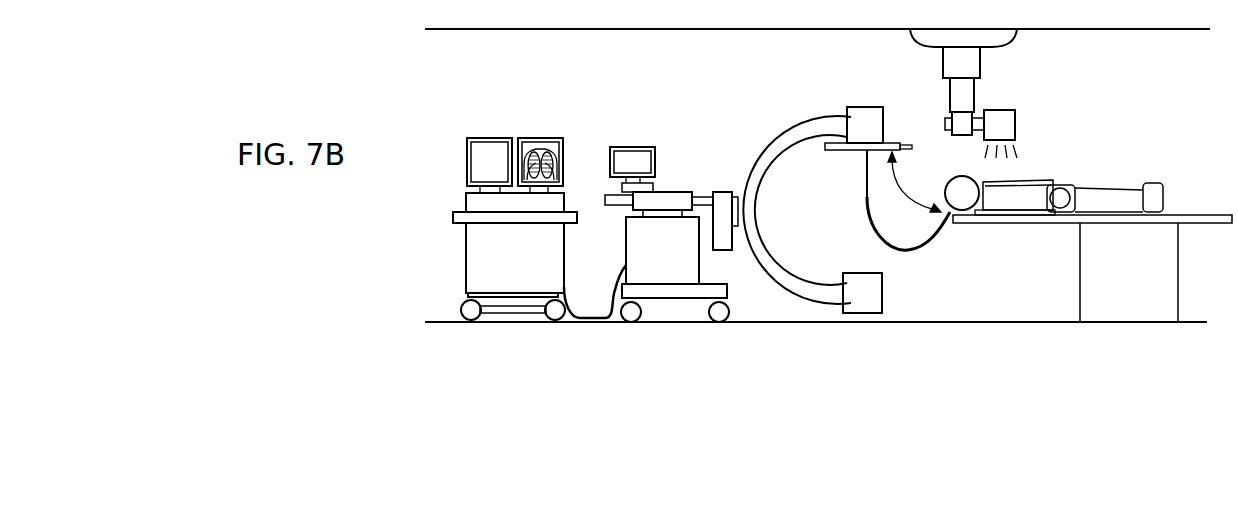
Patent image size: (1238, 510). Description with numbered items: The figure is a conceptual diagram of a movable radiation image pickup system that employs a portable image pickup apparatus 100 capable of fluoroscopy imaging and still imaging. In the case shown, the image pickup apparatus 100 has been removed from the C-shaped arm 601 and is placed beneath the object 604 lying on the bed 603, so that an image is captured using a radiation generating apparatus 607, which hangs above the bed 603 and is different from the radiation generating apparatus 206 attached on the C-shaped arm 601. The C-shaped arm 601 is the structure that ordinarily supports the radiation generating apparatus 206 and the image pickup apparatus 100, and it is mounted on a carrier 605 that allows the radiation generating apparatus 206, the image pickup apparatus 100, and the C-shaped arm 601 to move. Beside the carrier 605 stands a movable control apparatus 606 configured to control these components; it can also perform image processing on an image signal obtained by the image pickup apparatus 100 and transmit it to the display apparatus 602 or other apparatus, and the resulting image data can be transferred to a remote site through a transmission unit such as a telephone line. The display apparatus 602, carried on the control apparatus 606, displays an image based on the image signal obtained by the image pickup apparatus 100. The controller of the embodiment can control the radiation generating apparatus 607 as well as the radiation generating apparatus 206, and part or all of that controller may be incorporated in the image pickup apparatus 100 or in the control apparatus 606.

The image pickup apparatus 100 is at (1007, 213).
The radiation generating apparatus 206 is at (863, 308).
The C-shaped arm 601 is at (764, 167).
The display apparatus 602 is at (545, 138).
The bed 603 is at (1053, 212).
The object 604 is at (1127, 187).
The carrier 605 is at (675, 293).
The control apparatus 606 is at (513, 282).
The radiation generating apparatus 607 is at (1008, 128).